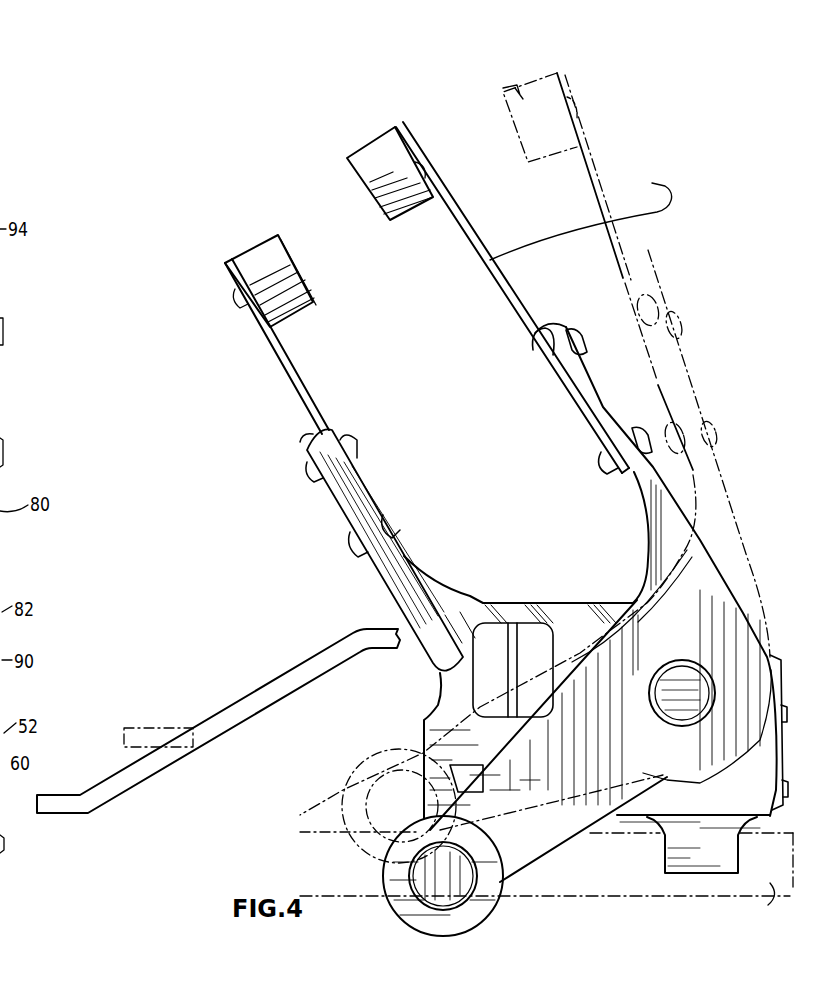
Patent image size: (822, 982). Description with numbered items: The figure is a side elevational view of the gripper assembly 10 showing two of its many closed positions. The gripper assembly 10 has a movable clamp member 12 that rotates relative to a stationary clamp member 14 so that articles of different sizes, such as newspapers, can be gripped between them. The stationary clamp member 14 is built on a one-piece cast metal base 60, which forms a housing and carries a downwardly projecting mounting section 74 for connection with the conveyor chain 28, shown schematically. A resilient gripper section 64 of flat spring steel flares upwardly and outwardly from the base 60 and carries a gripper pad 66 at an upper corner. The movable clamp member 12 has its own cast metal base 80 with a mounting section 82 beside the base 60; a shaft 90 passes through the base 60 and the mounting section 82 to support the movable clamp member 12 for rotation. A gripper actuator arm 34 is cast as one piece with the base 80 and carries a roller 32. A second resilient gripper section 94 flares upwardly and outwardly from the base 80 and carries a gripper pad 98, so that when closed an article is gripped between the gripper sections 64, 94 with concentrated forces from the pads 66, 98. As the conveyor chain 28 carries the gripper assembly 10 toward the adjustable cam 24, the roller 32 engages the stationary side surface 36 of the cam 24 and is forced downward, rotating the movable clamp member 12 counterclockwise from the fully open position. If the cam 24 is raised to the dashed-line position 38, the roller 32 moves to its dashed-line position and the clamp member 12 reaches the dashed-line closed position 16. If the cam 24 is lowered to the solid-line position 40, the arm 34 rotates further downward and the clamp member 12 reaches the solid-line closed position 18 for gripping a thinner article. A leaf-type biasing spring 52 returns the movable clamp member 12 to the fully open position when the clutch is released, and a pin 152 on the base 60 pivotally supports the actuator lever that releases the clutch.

The gripper assembly 10 is at (722, 197).
The movable clamp member 12 is at (527, 267).
The stationary clamp member 14 is at (344, 438).
The closed position 16 is at (575, 82).
The closed position 18 is at (405, 122).
The adjustable cam 24 is at (218, 726).
The conveyor chain 28 is at (760, 926).
The roller 32 is at (343, 797).
The gripper actuator arm 34 is at (440, 713).
The stationary side surface 36 is at (237, 723).
The raised cam position 38 is at (157, 735).
The lowered cam position 40 is at (63, 803).
The biasing spring 52 is at (775, 757).
The base 60 is at (457, 603).
The gripper section 64 is at (318, 392).
The gripper pad 66 is at (262, 256).
The mounting section 74 is at (703, 857).
The base 80 is at (612, 404).
The mounting section 82 is at (713, 598).
The shaft 90 is at (688, 697).
The gripper section 94 is at (581, 217).
The gripper pad 98 is at (398, 197).
The pin 152 is at (507, 640).